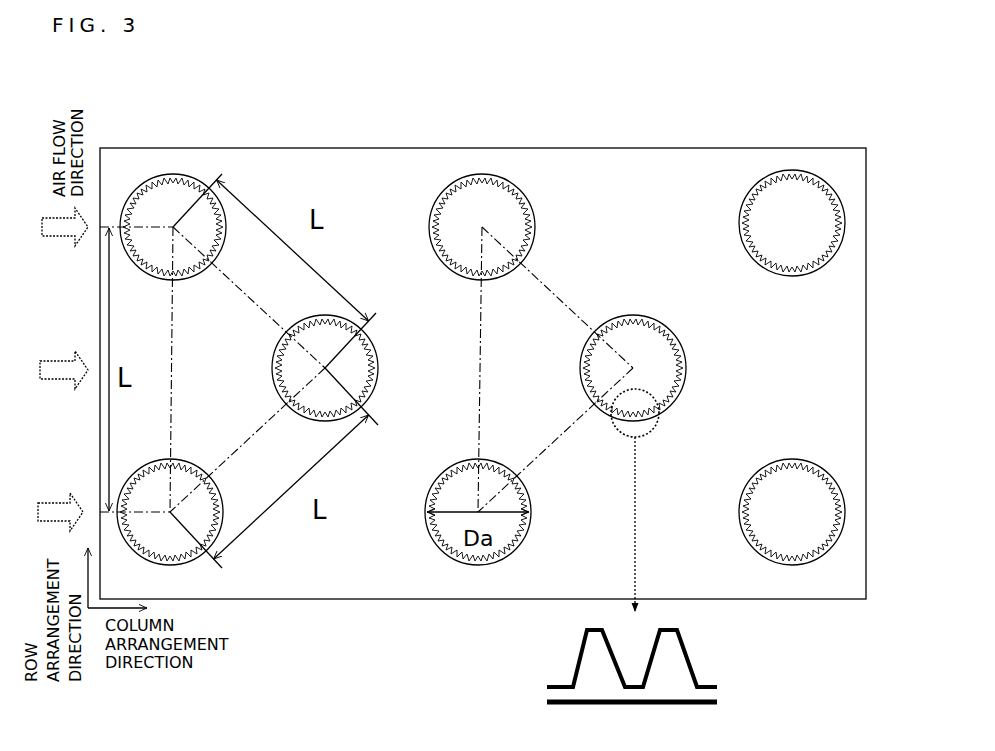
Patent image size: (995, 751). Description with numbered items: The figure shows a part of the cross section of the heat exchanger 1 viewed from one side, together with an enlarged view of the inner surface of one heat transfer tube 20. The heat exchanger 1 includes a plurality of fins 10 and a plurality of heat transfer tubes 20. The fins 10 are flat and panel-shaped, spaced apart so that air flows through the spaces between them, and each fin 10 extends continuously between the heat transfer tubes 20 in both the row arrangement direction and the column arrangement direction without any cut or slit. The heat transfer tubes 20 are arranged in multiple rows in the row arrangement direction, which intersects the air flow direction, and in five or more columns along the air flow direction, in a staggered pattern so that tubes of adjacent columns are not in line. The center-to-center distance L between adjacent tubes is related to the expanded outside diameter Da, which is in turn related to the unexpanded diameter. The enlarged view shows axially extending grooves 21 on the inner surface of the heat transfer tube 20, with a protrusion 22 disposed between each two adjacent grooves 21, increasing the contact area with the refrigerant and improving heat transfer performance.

The heat exchanger 1 is at (230, 136).
The fin 10 is at (620, 207).
The heat transfer tube 20 is at (478, 567).
The groove 21 is at (630, 648).
The protrusion 22 is at (668, 627).